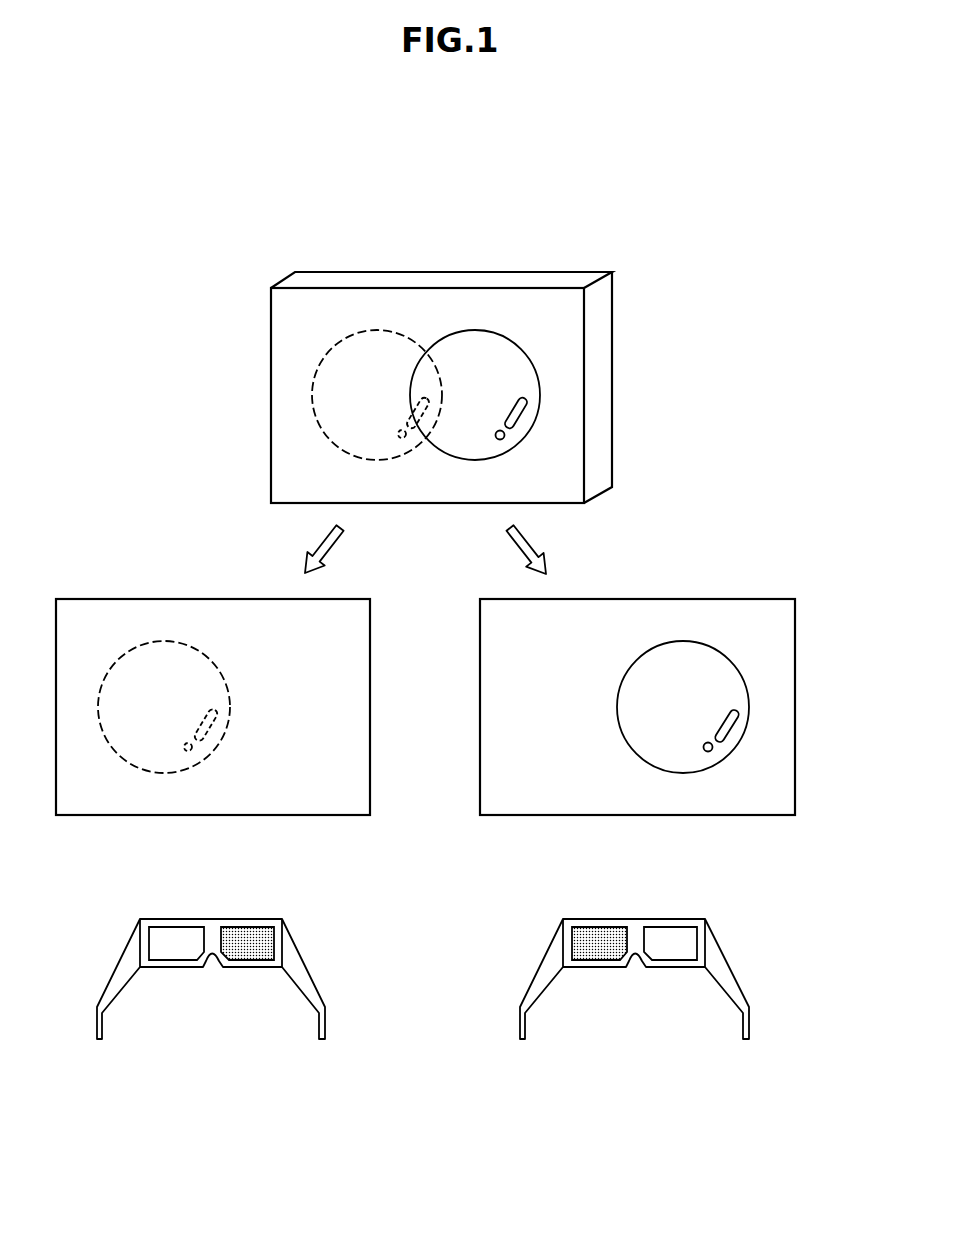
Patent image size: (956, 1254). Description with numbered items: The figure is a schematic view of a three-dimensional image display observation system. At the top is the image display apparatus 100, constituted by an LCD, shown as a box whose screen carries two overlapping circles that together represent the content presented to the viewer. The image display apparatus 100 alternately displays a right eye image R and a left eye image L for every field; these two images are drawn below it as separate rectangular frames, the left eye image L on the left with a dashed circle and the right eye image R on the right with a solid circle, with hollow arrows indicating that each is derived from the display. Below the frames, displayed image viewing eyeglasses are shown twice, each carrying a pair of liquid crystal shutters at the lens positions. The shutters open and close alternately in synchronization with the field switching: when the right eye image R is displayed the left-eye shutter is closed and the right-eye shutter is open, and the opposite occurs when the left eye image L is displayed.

The image display apparatus 100 is at (605, 327).
The left eye image L is at (163, 607).
The right eye image R is at (687, 607).